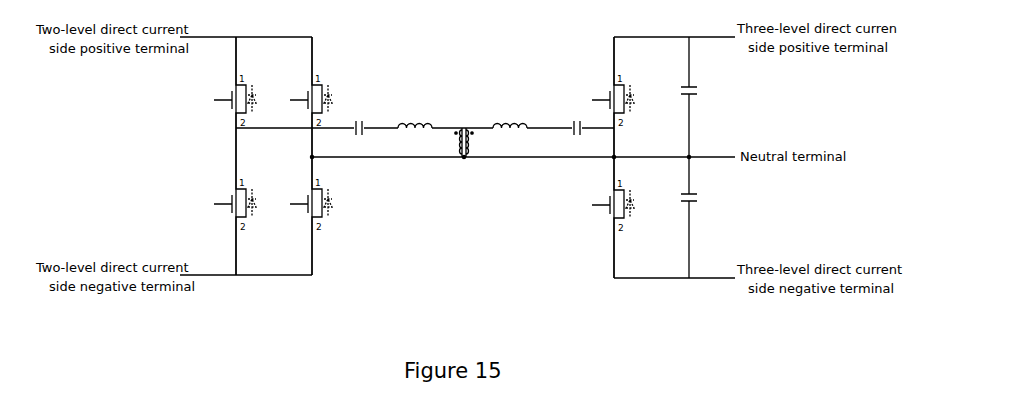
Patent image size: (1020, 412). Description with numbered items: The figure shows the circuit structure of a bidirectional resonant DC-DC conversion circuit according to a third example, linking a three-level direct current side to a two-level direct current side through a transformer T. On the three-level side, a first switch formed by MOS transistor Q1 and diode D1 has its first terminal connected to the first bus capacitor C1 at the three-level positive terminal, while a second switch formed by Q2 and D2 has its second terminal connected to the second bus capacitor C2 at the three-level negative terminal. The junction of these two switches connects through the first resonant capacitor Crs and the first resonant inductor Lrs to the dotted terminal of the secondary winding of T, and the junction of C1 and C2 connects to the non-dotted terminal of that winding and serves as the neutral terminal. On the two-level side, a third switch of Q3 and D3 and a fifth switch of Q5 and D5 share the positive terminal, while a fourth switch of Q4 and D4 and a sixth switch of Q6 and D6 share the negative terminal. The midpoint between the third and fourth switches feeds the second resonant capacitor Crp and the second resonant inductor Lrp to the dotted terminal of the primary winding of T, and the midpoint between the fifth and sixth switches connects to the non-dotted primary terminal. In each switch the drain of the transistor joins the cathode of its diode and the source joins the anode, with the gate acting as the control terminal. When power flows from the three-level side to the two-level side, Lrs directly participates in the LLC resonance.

The MOS transistor Q1 is at (606, 97).
The MOS transistor Q2 is at (606, 217).
The MOS transistor Q3 is at (228, 82).
The MOS transistor Q4 is at (228, 201).
The MOS transistor Q5 is at (304, 82).
The MOS transistor Q6 is at (304, 201).
The diode D1 is at (640, 99).
The diode D2 is at (640, 204).
The diode D3 is at (262, 99).
The diode D4 is at (262, 203).
The diode D5 is at (338, 99).
The diode D6 is at (338, 203).
The first bus capacitor C1 is at (701, 92).
The second bus capacitor C2 is at (701, 199).
The second resonant capacitor Crp is at (359, 118).
The first resonant capacitor Crs is at (576, 118).
The second resonant inductor Lrp is at (415, 114).
The first resonant inductor Lrs is at (510, 114).
The transformer T is at (464, 133).